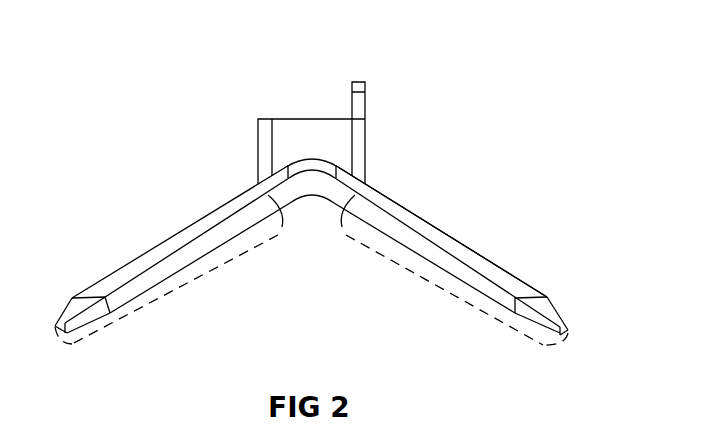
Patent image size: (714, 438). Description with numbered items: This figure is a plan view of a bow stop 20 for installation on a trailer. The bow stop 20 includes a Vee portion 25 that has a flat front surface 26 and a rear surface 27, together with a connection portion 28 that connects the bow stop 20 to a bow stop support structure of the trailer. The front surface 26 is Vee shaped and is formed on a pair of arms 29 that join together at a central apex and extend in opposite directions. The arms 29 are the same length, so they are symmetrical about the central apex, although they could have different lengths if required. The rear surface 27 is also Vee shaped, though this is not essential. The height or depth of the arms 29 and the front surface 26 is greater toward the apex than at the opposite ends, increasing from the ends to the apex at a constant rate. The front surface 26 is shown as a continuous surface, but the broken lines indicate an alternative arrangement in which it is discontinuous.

The bow stop 20 is at (463, 110).
The Vee portion 25 is at (465, 275).
The front surface 26 is at (410, 250).
The rear surface 27 is at (432, 225).
The connection portion 28 is at (298, 125).
The arms 29 is at (168, 248).